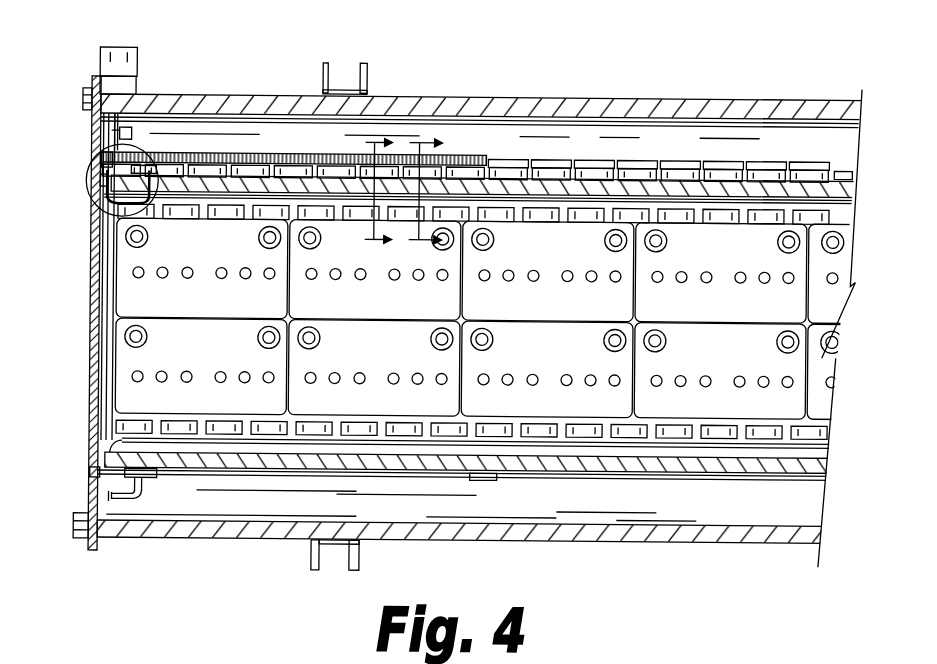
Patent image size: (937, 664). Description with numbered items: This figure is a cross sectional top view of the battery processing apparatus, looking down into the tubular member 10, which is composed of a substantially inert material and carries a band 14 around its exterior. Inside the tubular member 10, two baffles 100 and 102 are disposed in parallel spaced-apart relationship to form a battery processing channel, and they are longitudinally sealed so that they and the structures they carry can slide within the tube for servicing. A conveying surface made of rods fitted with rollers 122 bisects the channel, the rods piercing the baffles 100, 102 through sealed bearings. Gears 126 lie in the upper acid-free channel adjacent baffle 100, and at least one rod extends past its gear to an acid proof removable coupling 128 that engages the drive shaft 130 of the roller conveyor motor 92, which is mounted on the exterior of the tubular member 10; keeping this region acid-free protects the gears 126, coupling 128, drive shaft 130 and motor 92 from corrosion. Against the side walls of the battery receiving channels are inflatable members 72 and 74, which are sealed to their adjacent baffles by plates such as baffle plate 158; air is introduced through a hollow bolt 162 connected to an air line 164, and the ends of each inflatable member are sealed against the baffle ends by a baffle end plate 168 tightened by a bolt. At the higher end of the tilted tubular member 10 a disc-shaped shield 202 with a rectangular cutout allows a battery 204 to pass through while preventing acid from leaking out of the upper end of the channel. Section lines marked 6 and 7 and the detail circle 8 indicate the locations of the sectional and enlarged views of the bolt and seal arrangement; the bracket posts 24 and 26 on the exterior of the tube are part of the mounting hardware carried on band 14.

The tubular member 10 is at (592, 92).
The band 14 is at (345, 92).
The bracket post 24 is at (369, 70).
The bracket post 26 is at (323, 88).
The inflatable member 72 is at (852, 181).
The inflatable member 74 is at (123, 442).
The roller conveyor motor 92 is at (137, 72).
The baffle 100 is at (852, 175).
The baffle 102 is at (824, 459).
The rollers 122 is at (828, 427).
The gears 126 is at (323, 156).
The acid proof removable coupling 128 is at (100, 160).
The drive shaft 130 is at (124, 123).
The baffle plate 158 is at (853, 196).
The hollow bolt 162 is at (155, 192).
The air line 164 is at (143, 493).
The baffle end plate 168 is at (100, 178).
The disc-shaped shield 202 is at (95, 475).
The battery 204 is at (175, 312).
The section line 6- 6 is at (379, 191).
The section line 7- 7 is at (426, 192).
The detail circle 8 is at (78, 148).